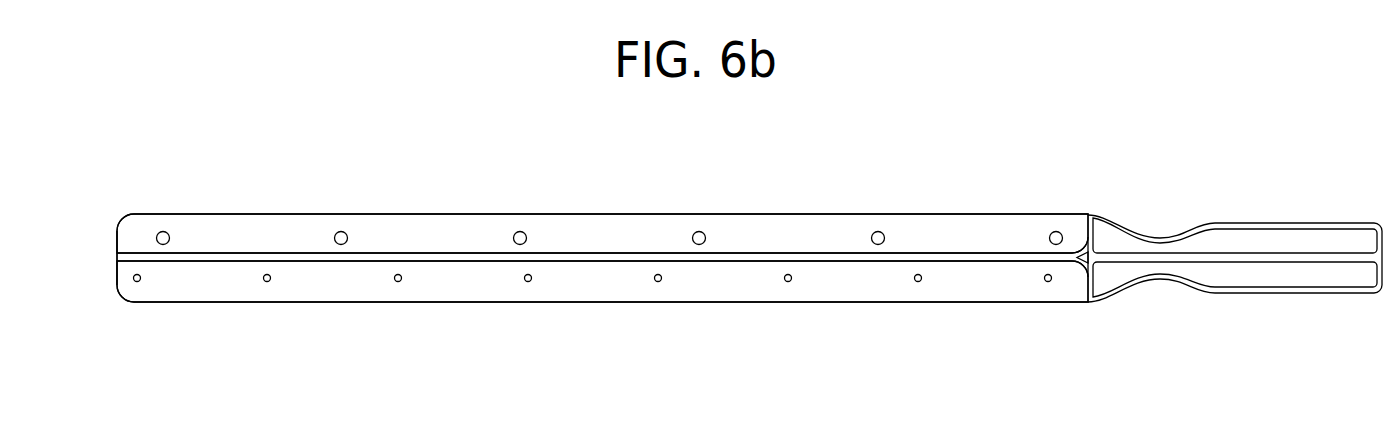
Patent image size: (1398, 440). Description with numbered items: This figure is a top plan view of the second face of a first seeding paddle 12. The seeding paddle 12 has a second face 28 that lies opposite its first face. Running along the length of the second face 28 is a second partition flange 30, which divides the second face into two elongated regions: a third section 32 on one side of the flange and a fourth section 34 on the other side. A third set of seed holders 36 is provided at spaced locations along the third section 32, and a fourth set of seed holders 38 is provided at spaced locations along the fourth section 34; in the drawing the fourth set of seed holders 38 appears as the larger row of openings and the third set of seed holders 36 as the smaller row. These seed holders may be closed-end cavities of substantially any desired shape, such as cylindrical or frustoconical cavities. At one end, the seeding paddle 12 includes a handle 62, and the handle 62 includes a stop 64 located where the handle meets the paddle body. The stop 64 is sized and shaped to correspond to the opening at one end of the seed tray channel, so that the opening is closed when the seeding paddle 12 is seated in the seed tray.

The seeding paddle 12 is at (1070, 170).
The second face 28 is at (125, 237).
The second partition flange 30 is at (560, 257).
The third section 32 is at (472, 287).
The fourth section 34 is at (443, 230).
The third set of seed holders 36 is at (395, 281).
The fourth set of seed holders 38 is at (337, 233).
The handle 62 is at (1268, 293).
The stop 64 is at (1078, 290).